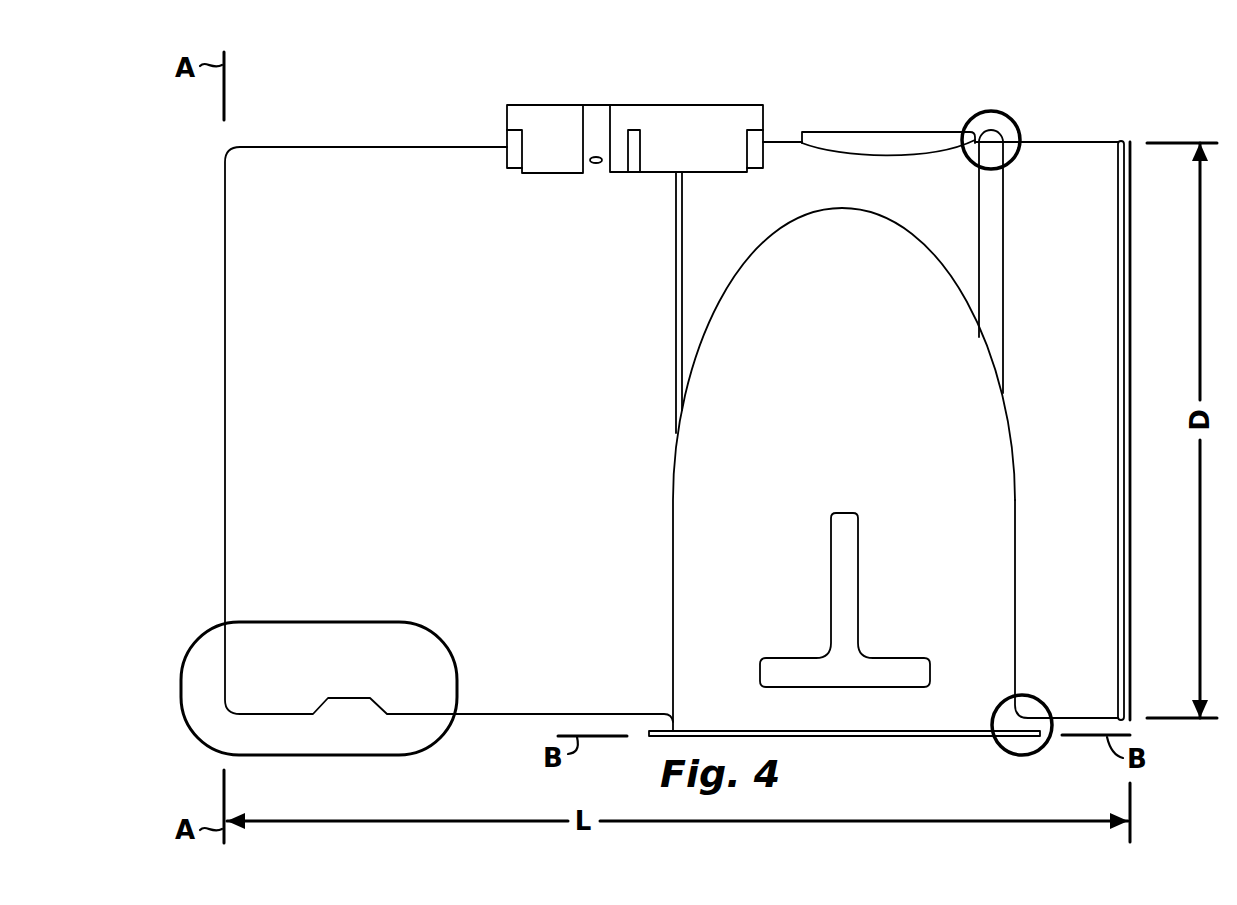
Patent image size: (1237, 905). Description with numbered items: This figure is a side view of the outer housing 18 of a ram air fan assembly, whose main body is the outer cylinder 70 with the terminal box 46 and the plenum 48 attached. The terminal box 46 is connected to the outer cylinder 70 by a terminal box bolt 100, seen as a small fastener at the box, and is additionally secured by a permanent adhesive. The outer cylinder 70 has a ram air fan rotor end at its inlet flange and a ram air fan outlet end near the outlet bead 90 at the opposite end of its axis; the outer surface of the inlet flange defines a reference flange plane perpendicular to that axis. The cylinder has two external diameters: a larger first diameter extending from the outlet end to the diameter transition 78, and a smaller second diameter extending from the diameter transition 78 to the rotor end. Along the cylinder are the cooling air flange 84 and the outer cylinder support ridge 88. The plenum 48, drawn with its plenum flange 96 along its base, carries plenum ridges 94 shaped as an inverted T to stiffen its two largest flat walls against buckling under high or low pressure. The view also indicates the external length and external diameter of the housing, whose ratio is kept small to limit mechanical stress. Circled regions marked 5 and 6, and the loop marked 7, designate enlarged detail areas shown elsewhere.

The outer housing 18 is at (1086, 92).
The outer cylinder 70 is at (418, 138).
The terminal box bolt 100 is at (597, 157).
The terminal box 46 is at (673, 105).
The cooling air flange 84 is at (815, 132).
The detail view circle 5 is at (982, 112).
The outer cylinder support ridge 88 is at (1005, 188).
The outlet bead 90 is at (1132, 195).
The diameter transition 78 is at (678, 212).
The plenum 48 is at (663, 645).
The plenum ridges 94 is at (793, 675).
The plenum flange 96 is at (856, 736).
The detail view circle 6 is at (1045, 745).
The detail view loop 7 is at (427, 748).